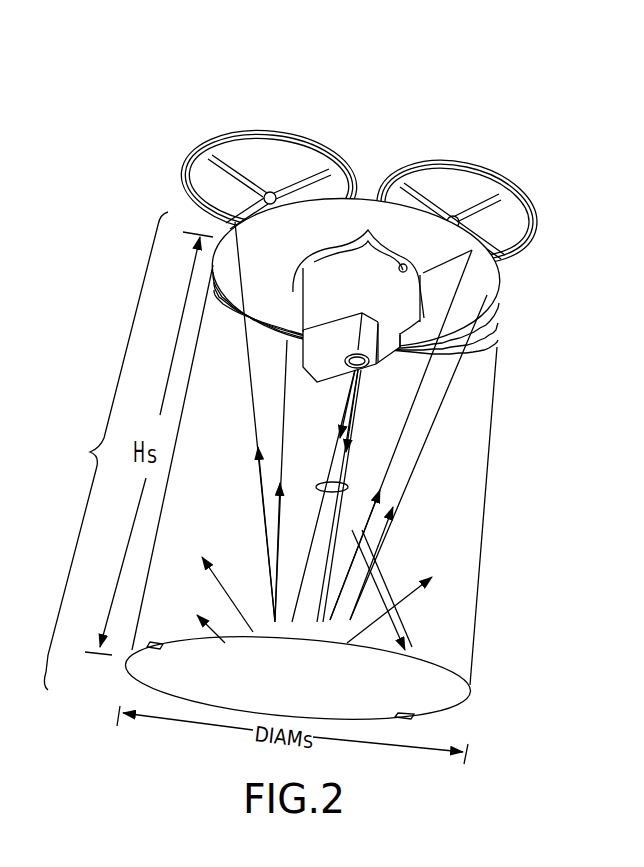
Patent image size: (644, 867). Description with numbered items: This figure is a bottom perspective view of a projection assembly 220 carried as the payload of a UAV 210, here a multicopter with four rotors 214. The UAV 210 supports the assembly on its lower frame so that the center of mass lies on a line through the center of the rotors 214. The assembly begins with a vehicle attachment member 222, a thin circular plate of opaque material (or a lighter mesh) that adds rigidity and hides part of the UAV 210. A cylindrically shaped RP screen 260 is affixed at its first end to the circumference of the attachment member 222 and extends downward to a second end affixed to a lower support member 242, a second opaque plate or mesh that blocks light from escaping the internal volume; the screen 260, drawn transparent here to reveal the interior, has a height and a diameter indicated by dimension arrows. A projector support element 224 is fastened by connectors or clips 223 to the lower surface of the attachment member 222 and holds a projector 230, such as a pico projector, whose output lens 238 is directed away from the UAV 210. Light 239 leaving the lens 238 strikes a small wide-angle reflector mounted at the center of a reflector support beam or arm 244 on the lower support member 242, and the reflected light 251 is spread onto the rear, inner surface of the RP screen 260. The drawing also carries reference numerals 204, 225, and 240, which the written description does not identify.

The aerial vehicle system 204 is at (88, 205).
The UAV 210 is at (533, 200).
The rotors 214 is at (340, 175).
The projection assembly 220 is at (128, 451).
The vehicle attachment member 222 is at (500, 285).
The connectors or clips 223 is at (358, 260).
The projector support element 224 is at (374, 296).
The camera module 225 is at (402, 337).
The projector 230 is at (304, 386).
The output lens 238 is at (366, 372).
The light 239 is at (342, 484).
The ground surface spot 240 is at (478, 702).
The lower support member 242 is at (440, 712).
The reflector support beam or arm 244 is at (147, 647).
The reflected light 251 is at (355, 532).
The RP screen 260 is at (497, 492).